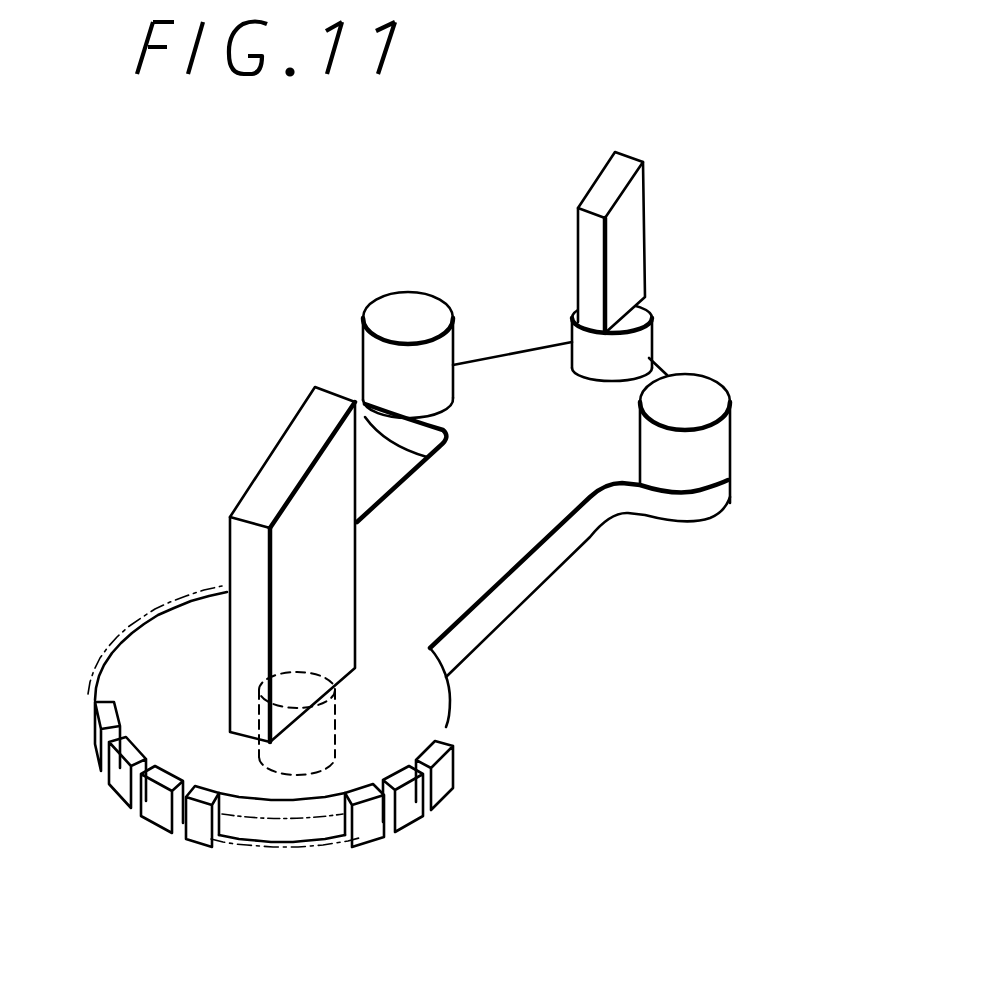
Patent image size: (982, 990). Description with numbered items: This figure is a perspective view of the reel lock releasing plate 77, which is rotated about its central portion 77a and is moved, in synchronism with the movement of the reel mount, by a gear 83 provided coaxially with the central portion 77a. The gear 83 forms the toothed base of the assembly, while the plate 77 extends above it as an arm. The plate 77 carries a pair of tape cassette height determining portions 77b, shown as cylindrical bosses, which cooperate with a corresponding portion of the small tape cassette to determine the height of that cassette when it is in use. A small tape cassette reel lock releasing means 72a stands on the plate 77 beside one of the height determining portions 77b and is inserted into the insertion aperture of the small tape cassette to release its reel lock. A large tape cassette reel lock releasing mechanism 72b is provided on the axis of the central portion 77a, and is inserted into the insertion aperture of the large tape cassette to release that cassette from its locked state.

The small tape cassette reel lock releasing means 72a is at (640, 234).
The large tape cassette reel lock releasing mechanism 72b is at (257, 500).
The reel lock releasing plate 77 is at (457, 573).
The central portion 77a is at (316, 768).
The tape cassette height determining portions 77b is at (363, 347).
The gear 83 is at (185, 743).